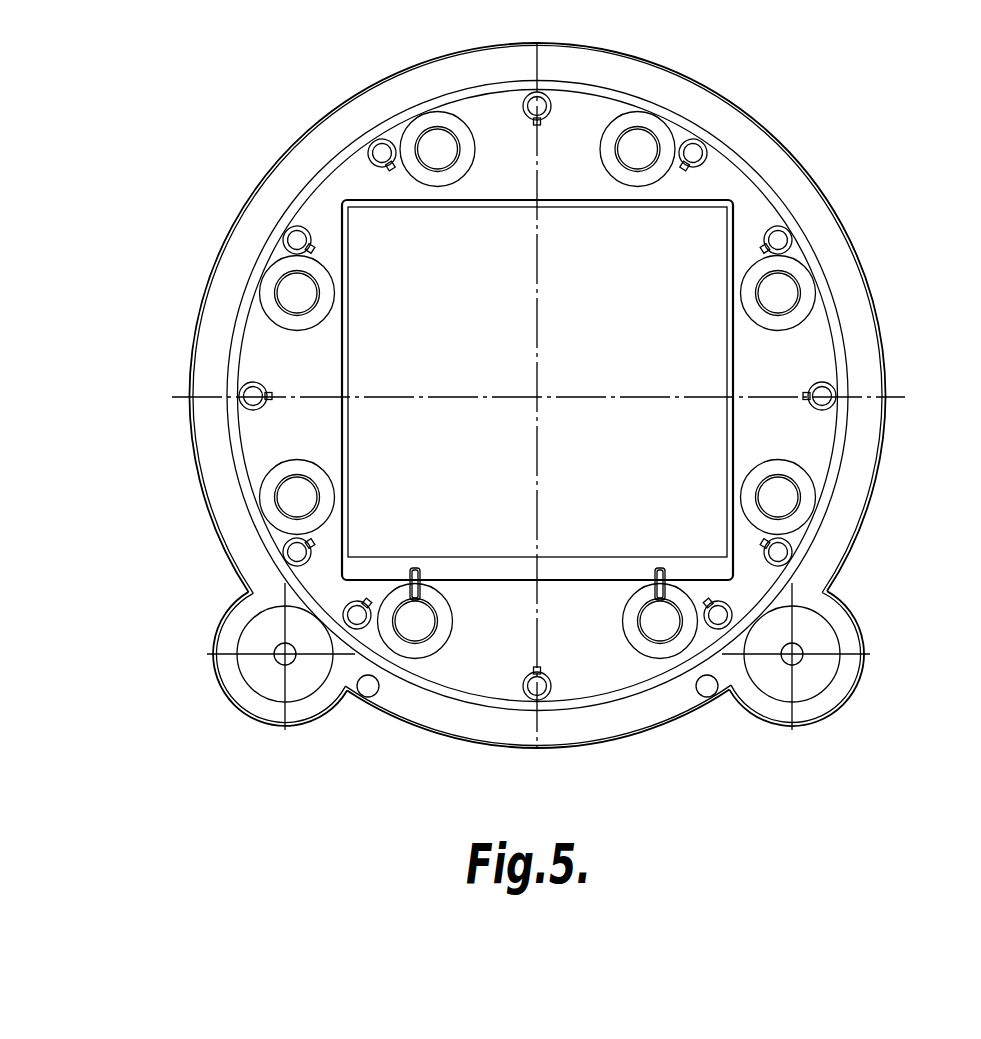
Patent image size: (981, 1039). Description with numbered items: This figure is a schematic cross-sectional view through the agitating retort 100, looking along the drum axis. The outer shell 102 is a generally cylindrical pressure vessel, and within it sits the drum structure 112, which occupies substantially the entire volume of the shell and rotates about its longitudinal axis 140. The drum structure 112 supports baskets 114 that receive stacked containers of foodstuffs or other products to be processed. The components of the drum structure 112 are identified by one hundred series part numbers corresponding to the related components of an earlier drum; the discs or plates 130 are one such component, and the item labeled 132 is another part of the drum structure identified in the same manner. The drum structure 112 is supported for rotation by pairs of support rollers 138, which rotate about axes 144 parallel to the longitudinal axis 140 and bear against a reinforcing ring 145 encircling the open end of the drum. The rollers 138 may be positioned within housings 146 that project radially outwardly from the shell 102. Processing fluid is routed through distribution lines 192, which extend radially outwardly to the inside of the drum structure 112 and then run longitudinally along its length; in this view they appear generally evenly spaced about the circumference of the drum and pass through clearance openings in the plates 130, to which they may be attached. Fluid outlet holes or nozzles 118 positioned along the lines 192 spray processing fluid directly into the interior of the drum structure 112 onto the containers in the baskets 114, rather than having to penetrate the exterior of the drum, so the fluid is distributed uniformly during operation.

The agitating retort 100 is at (354, 27).
The outer shell 102 is at (760, 121).
The drum structure 112 is at (338, 139).
The baskets 114 is at (473, 572).
The fluid outlet holes or nozzles 118 is at (266, 393).
The discs 130 is at (735, 190).
The bolt boss 132 is at (805, 269).
The support rollers 138 is at (265, 700).
The longitudinal axis 140 is at (540, 400).
The roller axes 144 is at (283, 653).
The reinforcing ring 145 is at (632, 697).
The housings 146 is at (215, 675).
The distribution lines 192 is at (240, 391).